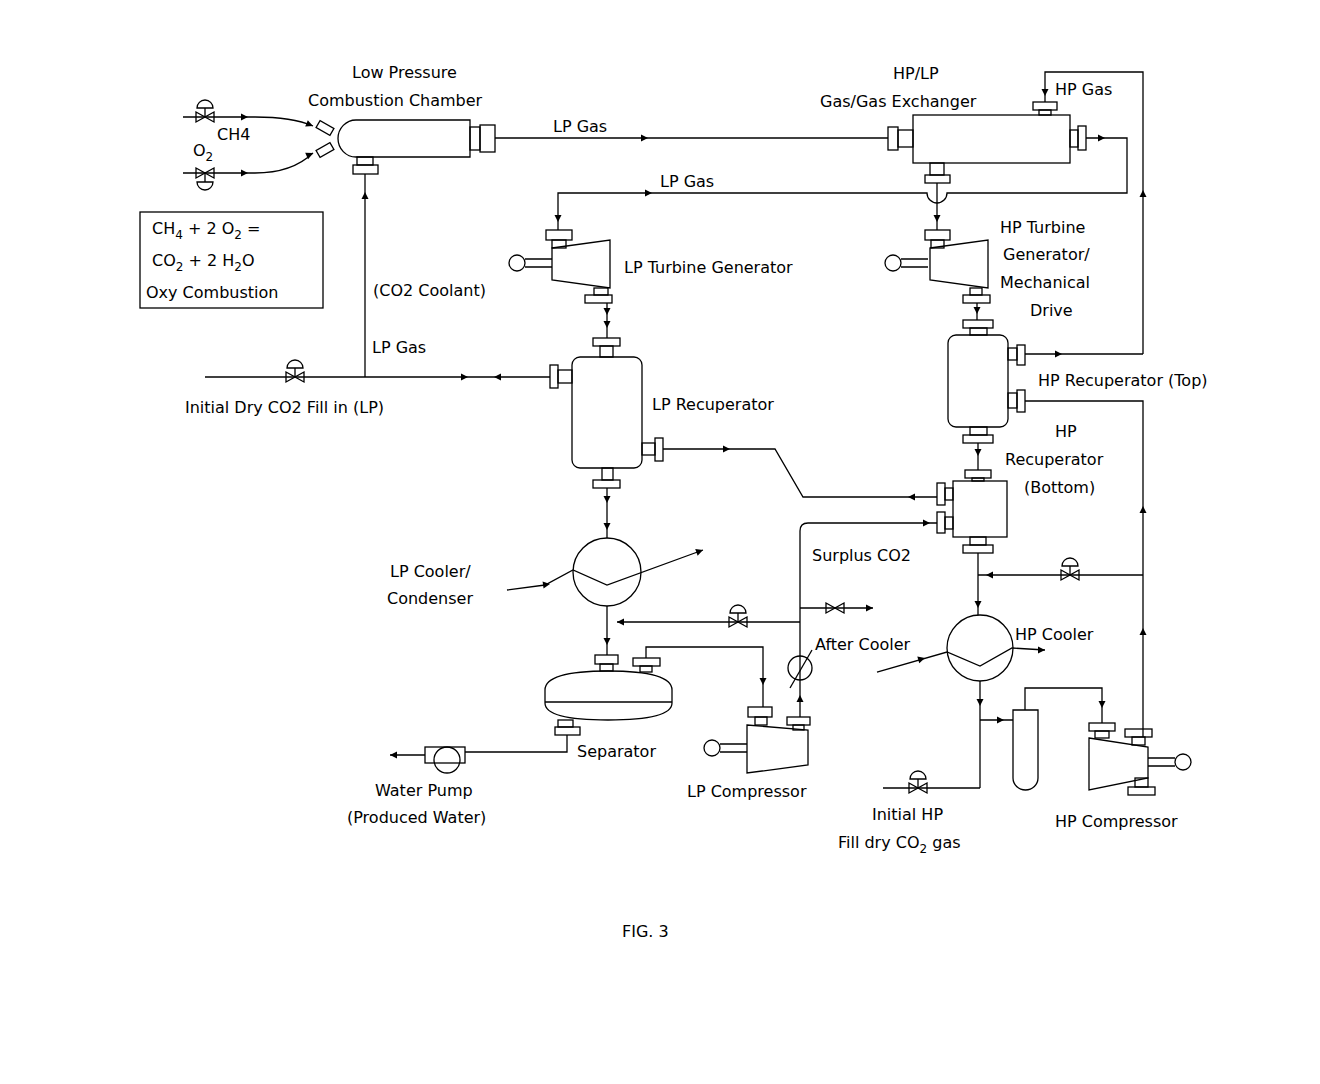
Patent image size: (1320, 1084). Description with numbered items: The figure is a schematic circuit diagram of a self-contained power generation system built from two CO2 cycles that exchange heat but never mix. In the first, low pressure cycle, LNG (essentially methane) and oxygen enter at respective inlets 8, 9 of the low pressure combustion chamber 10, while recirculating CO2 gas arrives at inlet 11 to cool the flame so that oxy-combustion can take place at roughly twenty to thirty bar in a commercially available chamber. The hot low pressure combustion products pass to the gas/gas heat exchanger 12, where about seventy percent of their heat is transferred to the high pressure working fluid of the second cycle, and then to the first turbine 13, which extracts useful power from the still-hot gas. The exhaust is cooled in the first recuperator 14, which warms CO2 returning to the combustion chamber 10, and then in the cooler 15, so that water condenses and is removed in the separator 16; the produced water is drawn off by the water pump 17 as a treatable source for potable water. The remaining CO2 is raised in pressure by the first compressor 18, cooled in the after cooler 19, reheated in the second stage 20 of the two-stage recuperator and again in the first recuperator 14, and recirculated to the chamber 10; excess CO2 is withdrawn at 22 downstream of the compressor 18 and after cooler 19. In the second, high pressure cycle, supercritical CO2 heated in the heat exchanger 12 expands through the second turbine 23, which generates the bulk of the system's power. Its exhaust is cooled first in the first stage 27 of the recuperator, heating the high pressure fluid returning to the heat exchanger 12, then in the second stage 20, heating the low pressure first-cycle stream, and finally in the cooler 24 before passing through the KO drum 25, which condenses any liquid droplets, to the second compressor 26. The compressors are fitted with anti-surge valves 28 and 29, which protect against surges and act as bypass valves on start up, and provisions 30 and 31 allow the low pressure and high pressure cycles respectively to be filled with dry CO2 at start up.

The inlet 8 is at (248, 100).
The inlet 9 is at (248, 179).
The low pressure combustion chamber 10 is at (405, 138).
The inlet 11 is at (349, 183).
The gas/gas heat exchanger 12 is at (987, 142).
The first turbine 13 is at (560, 266).
The first recuperator 14 is at (606, 413).
The cooler 15 is at (605, 572).
The separator 16 is at (545, 682).
The water pump 17 is at (428, 746).
The first compressor 18 is at (757, 740).
The after cooler 19 is at (819, 671).
The second stage of two-stage recuperator 20 is at (972, 511).
The excess CO2 withdrawal point 22 is at (859, 590).
The second turbine 23 is at (937, 266).
The cooler 24 is at (961, 648).
The KO drum 25 is at (1025, 773).
The second compressor 26 is at (1140, 759).
The first stage of two-stage recuperator 27 is at (986, 381).
The anti-surge valve 28 is at (738, 600).
The anti-surge valve 29 is at (1070, 553).
The fill provision 30 is at (295, 357).
The fill provision 31 is at (897, 770).